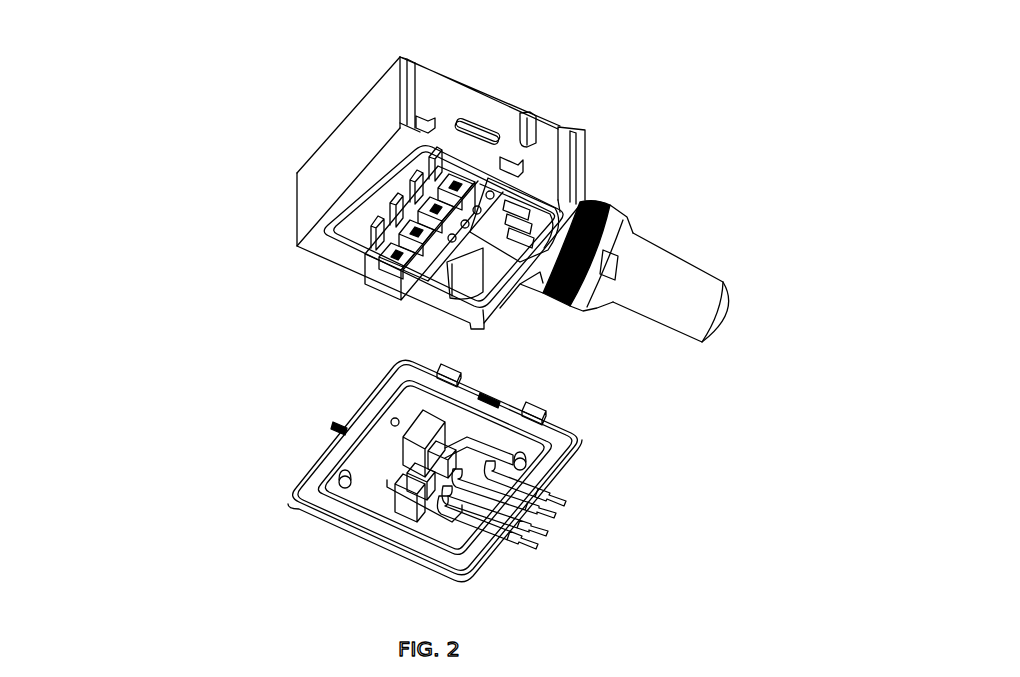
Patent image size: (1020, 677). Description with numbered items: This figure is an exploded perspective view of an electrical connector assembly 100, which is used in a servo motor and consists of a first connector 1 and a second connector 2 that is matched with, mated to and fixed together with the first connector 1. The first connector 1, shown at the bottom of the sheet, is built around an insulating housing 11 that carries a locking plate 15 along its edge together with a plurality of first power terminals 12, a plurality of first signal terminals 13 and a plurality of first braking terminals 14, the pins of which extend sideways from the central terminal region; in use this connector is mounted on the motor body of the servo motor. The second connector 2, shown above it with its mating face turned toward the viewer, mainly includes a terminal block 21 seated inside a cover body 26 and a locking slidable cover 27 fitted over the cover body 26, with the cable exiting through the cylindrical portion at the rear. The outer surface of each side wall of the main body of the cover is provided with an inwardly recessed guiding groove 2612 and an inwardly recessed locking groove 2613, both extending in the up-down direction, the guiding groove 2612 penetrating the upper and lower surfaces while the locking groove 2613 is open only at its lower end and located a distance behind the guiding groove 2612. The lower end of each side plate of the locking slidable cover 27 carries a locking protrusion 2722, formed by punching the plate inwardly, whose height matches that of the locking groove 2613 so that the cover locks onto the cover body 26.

The electrical connector assembly 100 is at (193, 80).
The second connector 2 is at (662, 184).
The cover body 26 is at (312, 173).
The locking slidable cover 27 is at (427, 78).
The locking protrusion 2722 is at (462, 148).
The guiding groove 2612 is at (462, 150).
The locking groove 2613 is at (460, 151).
The terminal block 21 is at (385, 232).
The first connector 1 is at (604, 448).
The insulating housing 11 is at (318, 442).
The first power terminals 12 is at (427, 510).
The first signal terminals 13 is at (565, 496).
The first braking terminals 14 is at (510, 540).
The locking plate 15 is at (538, 403).